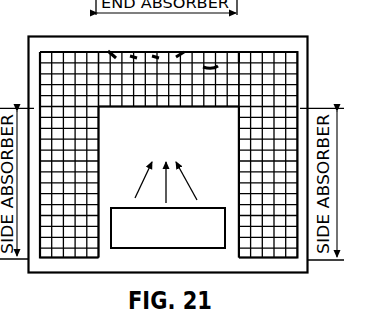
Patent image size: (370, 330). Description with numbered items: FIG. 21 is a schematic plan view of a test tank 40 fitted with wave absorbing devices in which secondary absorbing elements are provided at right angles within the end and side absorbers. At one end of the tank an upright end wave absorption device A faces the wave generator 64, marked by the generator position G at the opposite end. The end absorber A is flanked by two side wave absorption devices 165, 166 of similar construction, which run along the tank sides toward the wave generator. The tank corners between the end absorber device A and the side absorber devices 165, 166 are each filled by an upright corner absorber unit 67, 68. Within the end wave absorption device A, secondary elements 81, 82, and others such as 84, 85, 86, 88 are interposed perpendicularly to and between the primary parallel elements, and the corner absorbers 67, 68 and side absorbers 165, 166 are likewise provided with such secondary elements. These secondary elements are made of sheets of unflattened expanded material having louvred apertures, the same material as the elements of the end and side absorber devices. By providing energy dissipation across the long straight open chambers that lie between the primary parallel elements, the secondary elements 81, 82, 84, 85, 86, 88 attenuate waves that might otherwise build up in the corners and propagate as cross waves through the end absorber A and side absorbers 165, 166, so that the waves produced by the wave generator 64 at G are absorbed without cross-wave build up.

The wave tank frame 40 is at (28, 97).
The corner absorber unit 67 is at (65, 80).
The corner absorber unit 68 is at (274, 86).
The end wave absorption device A is at (212, 97).
The side wave absorption device 165 is at (101, 168).
The side wave absorption device 166 is at (239, 172).
The secondary element 86 is at (112, 55).
The secondary element 85 is at (134, 57).
The secondary element 84 is at (157, 57).
The secondary element 88 is at (179, 54).
The secondary element 82 is at (202, 66).
The secondary element 81 is at (239, 52).
The wave generator 64 is at (226, 209).
The wave generator G is at (128, 249).